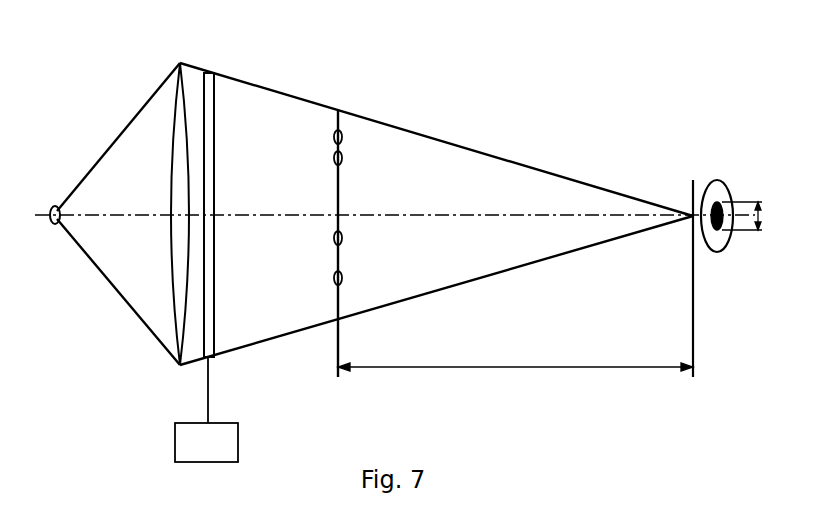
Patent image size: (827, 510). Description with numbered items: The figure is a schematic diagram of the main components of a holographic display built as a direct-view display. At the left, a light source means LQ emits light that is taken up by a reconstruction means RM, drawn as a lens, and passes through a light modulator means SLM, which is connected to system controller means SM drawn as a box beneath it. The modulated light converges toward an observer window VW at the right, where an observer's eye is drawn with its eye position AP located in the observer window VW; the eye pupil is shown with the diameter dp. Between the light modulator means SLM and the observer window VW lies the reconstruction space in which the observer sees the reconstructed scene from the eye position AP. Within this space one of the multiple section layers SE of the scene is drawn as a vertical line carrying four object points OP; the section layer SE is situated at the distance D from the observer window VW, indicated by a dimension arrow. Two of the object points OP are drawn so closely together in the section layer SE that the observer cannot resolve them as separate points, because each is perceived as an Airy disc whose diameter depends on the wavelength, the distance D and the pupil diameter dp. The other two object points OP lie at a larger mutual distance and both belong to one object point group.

The light source means LQ is at (37, 196).
The reconstruction means RM is at (166, 194).
The light modulator means SLM is at (229, 190).
The system controller means SM is at (206, 409).
The section layer SE is at (354, 225).
The object points OP is at (342, 278).
The observer window VW is at (675, 257).
The eye position AP is at (697, 219).
The eye pupil diameter dp is at (757, 216).
The distance between section layer and observer window D is at (515, 357).